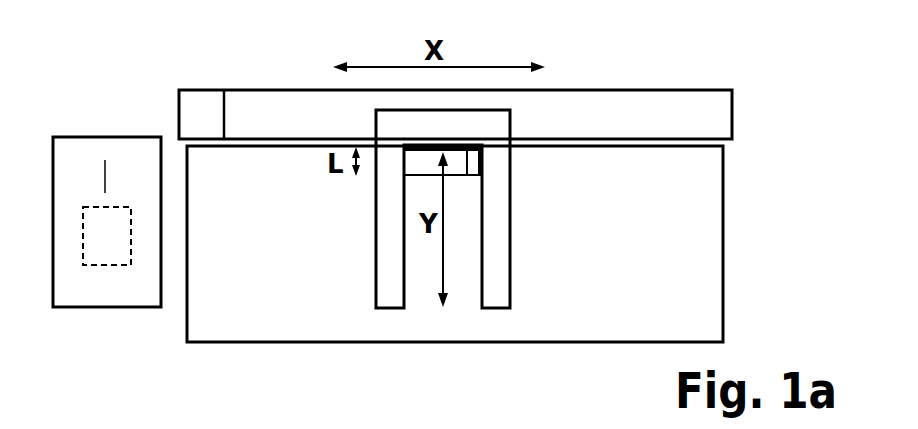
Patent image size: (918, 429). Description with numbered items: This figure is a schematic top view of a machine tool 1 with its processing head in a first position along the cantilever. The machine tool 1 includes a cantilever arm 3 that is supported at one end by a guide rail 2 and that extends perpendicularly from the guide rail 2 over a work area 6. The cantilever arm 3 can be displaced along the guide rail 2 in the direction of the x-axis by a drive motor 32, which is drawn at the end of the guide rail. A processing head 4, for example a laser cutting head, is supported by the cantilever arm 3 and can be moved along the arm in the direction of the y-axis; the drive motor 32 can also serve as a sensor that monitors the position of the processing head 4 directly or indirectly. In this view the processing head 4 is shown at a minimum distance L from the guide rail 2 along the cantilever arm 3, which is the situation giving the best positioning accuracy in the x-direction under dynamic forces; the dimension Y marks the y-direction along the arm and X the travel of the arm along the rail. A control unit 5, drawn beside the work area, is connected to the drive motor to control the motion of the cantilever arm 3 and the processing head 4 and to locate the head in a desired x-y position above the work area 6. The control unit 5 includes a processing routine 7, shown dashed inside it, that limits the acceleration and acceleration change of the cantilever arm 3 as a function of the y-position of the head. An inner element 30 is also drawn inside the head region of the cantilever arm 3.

The machine tool 1 is at (135, 88).
The guide rail 2 is at (720, 118).
The drive motor 32 is at (194, 107).
The cantilever arm 3 is at (500, 189).
The processing head 4 is at (422, 165).
The inner element 30 is at (473, 163).
The control unit 5 is at (120, 307).
The work area 6 is at (723, 252).
The processing routine 7 is at (105, 265).